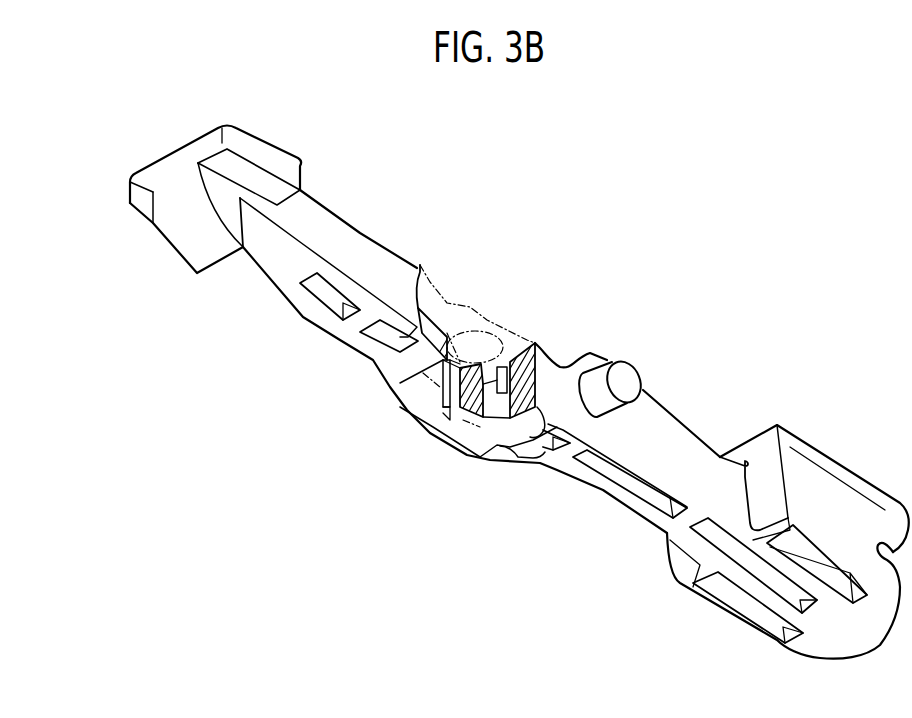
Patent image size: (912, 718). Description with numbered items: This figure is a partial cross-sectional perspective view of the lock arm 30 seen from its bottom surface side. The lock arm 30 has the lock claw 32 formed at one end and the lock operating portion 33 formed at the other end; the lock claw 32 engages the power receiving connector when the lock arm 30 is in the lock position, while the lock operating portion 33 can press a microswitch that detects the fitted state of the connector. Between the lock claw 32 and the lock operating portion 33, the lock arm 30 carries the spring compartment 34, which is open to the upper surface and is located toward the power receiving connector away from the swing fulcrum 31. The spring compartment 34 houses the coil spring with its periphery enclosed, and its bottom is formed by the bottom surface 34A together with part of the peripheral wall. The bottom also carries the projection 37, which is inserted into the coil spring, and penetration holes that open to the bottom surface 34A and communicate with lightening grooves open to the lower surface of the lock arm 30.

The lock arm 30 is at (622, 238).
The swing fulcrum 31 is at (623, 380).
The lock claw 32 is at (200, 247).
The lock operating portion 33 is at (807, 475).
The spring compartment 34 is at (460, 337).
The bottom surface 34A is at (437, 392).
The projection 37 is at (480, 373).